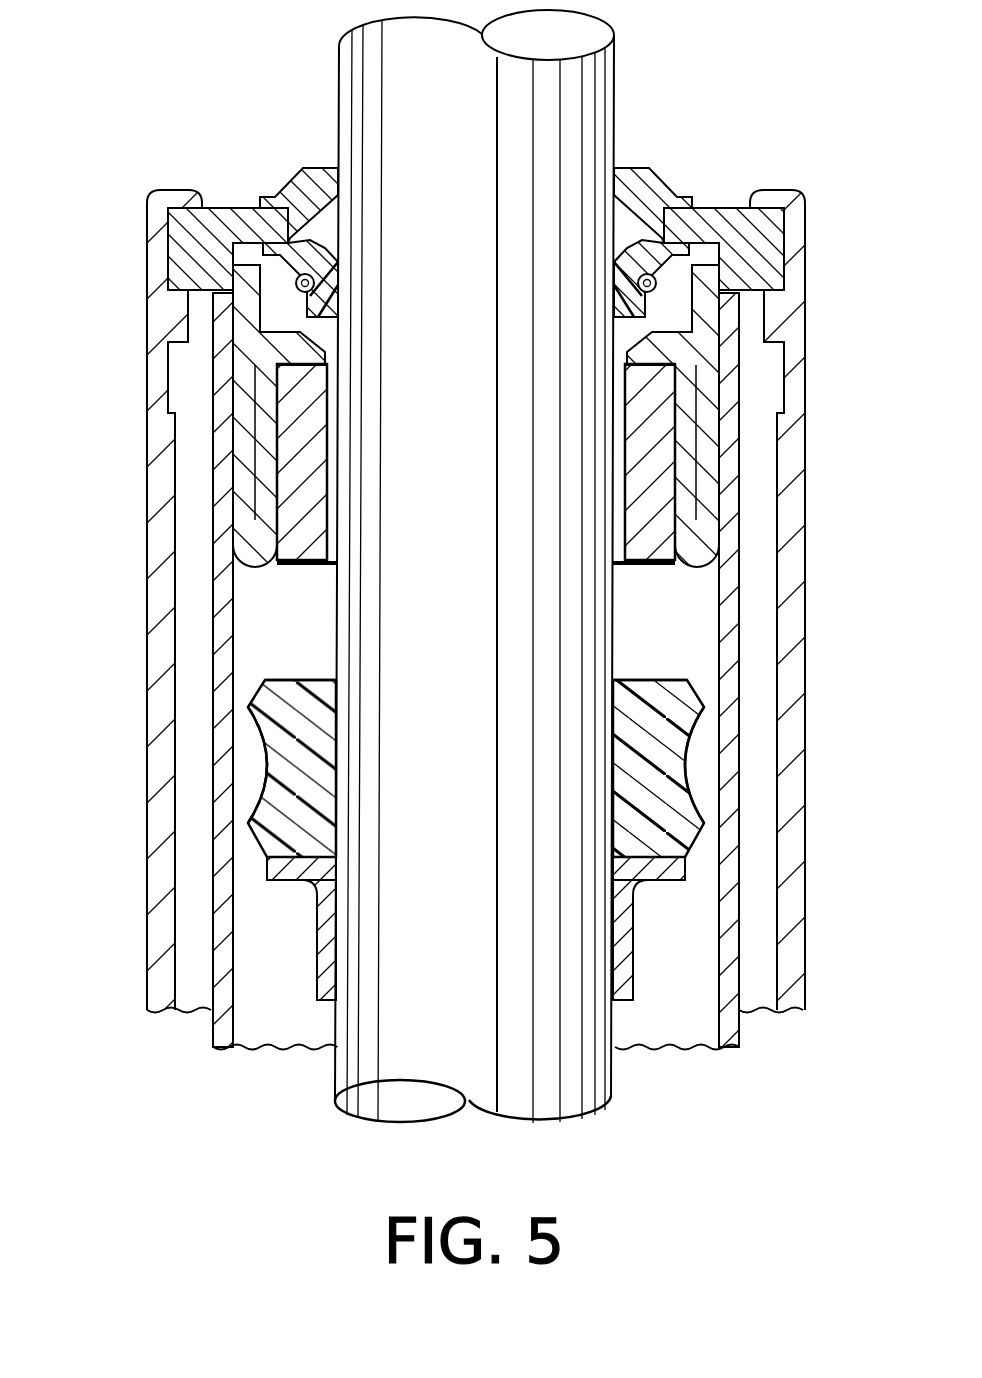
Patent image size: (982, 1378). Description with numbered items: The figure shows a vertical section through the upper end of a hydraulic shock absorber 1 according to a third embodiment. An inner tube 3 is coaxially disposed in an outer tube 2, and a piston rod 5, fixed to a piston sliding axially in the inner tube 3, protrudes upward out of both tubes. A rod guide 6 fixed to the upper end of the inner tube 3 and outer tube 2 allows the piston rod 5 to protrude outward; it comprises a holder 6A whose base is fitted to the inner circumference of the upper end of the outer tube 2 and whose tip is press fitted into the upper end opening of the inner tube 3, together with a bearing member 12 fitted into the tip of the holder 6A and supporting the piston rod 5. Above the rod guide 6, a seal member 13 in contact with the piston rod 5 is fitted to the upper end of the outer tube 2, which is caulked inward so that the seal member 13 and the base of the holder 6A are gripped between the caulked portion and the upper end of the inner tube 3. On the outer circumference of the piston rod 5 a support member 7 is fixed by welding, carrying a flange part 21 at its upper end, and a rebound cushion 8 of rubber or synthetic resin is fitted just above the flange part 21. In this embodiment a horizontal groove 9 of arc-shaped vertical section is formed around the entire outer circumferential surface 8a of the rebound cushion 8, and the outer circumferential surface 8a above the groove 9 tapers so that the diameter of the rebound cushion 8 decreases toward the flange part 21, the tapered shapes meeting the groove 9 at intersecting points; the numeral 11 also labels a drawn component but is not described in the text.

The hydraulic shock absorber 1 is at (460, 580).
The outer tube 2 is at (787, 830).
The inner tube 3 is at (727, 912).
The piston rod 5 is at (597, 1078).
The rod guide 6 is at (557, 460).
The holder 6A is at (710, 500).
The support member 7 is at (323, 965).
The rebound cushion 8 is at (374, 758).
The outer circumferential surface 8a is at (263, 688).
The horizontal groove 9 is at (263, 770).
The bearing ring 11 is at (671, 397).
The bearing member 12 is at (663, 568).
The seal member 13 is at (778, 238).
The flange part 21 is at (262, 863).